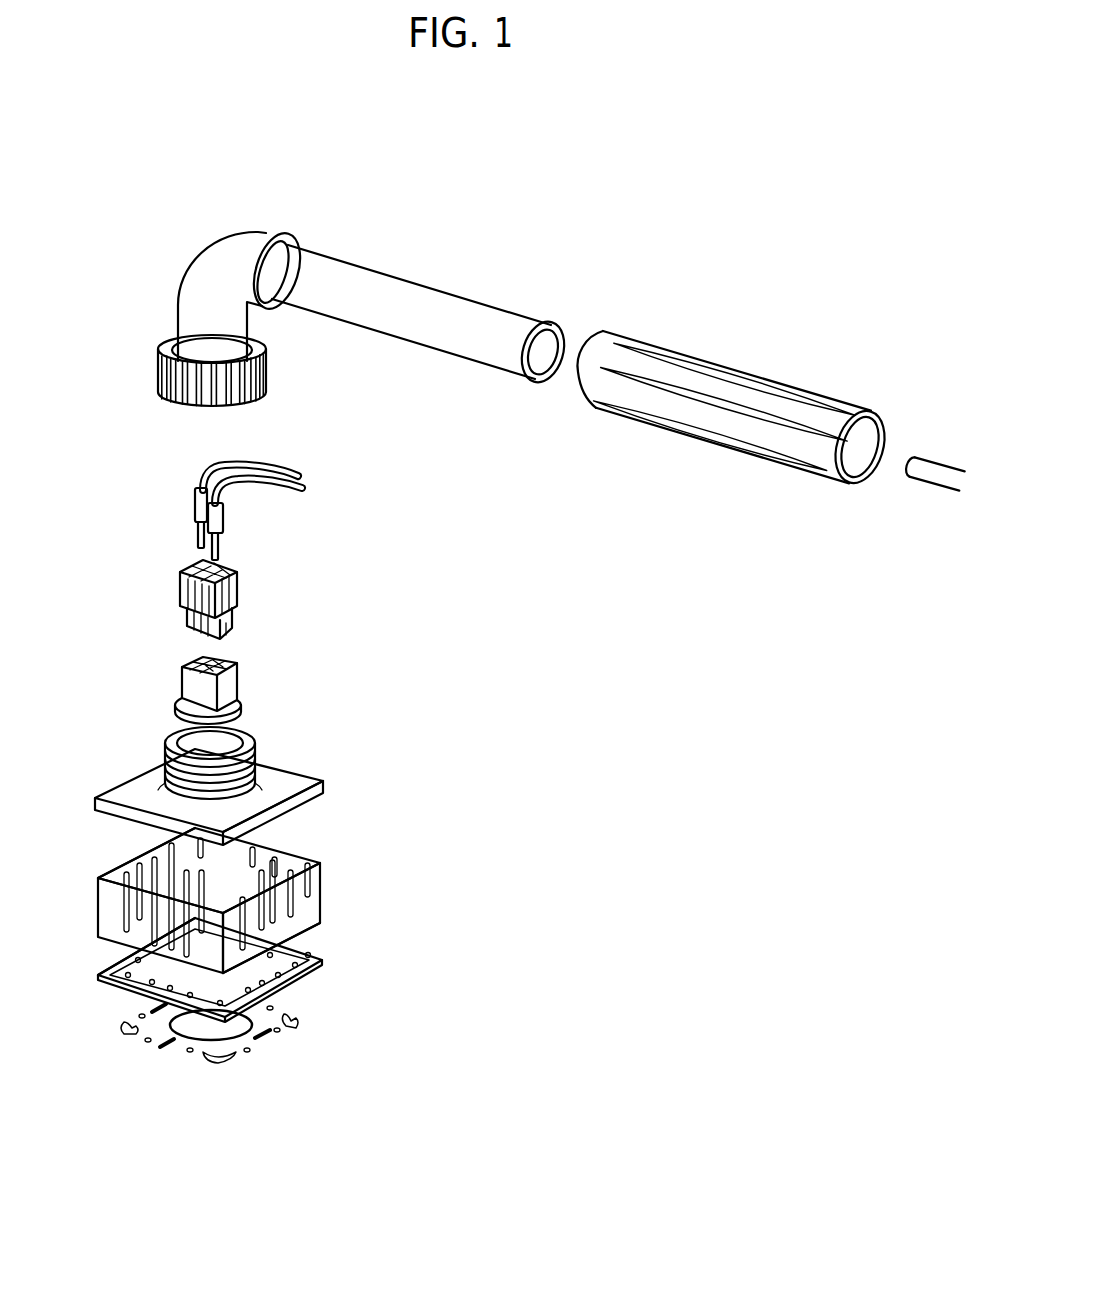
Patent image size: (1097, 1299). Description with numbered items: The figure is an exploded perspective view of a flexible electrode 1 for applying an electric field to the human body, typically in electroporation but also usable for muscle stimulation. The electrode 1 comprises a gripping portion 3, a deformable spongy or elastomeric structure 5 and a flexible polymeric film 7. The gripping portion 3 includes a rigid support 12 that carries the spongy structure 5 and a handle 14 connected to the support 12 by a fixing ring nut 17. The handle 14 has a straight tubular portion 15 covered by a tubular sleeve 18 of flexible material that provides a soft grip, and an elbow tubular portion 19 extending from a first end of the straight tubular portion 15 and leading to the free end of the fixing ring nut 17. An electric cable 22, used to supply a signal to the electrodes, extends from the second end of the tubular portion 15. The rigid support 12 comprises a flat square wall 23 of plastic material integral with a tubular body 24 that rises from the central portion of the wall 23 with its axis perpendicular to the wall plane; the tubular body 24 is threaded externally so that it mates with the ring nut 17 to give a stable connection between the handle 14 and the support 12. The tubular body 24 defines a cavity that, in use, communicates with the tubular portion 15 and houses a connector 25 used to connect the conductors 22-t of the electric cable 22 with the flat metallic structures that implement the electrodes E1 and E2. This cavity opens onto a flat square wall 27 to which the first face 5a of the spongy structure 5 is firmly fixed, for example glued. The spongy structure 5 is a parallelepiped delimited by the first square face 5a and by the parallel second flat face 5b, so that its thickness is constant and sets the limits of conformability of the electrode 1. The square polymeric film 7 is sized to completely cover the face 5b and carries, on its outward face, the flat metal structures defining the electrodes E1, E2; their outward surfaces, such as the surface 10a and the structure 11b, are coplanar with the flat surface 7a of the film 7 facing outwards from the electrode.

The flexible electrode 1 is at (490, 203).
The gripping portion 3 is at (353, 226).
The spongy/elastomeric structure 5 is at (336, 877).
The first face 5a is at (121, 862).
The second flat face 5b is at (306, 933).
The flexible polymeric film 7 is at (310, 957).
The flat surface 7a is at (115, 993).
The surface of flat metal structure 10a is at (220, 1067).
The flat metallic structure 11b is at (248, 1041).
The rigid support 12 is at (121, 762).
The handle 14 is at (444, 281).
The straight tubular portion 15 is at (457, 337).
The fixing ring nut 17 is at (158, 372).
The tubular sleeve 18 is at (705, 382).
The elbow tubular portion 19 is at (197, 286).
The electric cable 22 is at (920, 457).
The conductors 22-t is at (302, 490).
The flat square wall 23 is at (303, 784).
The tubular body 24 is at (163, 757).
The connector 25 is at (261, 646).
The flat square wall 27 is at (306, 812).
The first electrode E1 is at (183, 1039).
The second electrode E2 is at (301, 1030).